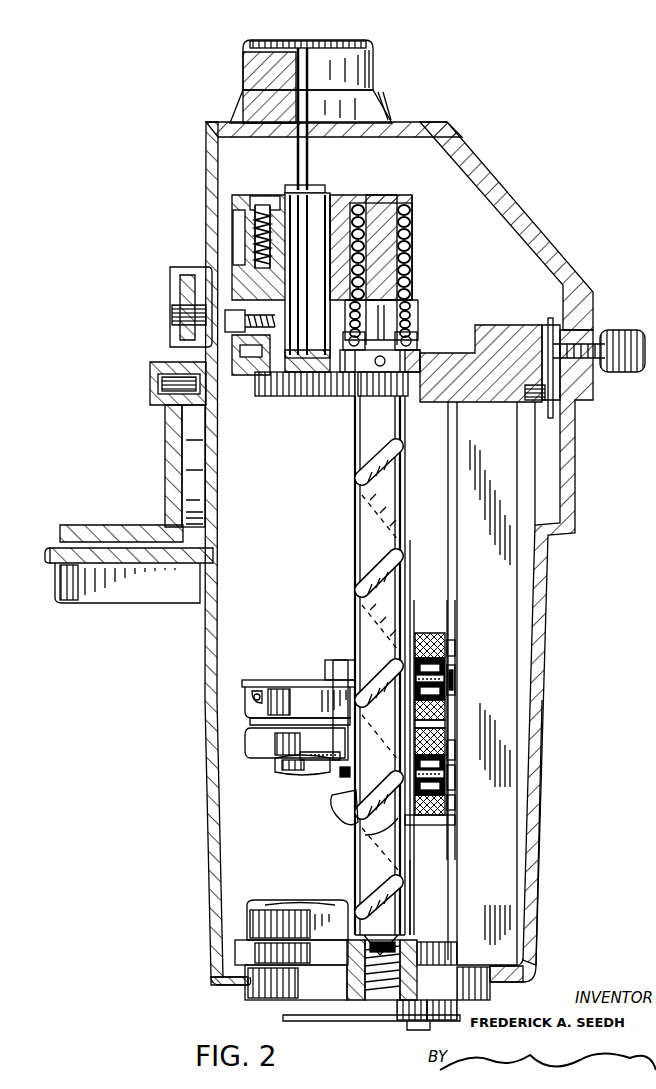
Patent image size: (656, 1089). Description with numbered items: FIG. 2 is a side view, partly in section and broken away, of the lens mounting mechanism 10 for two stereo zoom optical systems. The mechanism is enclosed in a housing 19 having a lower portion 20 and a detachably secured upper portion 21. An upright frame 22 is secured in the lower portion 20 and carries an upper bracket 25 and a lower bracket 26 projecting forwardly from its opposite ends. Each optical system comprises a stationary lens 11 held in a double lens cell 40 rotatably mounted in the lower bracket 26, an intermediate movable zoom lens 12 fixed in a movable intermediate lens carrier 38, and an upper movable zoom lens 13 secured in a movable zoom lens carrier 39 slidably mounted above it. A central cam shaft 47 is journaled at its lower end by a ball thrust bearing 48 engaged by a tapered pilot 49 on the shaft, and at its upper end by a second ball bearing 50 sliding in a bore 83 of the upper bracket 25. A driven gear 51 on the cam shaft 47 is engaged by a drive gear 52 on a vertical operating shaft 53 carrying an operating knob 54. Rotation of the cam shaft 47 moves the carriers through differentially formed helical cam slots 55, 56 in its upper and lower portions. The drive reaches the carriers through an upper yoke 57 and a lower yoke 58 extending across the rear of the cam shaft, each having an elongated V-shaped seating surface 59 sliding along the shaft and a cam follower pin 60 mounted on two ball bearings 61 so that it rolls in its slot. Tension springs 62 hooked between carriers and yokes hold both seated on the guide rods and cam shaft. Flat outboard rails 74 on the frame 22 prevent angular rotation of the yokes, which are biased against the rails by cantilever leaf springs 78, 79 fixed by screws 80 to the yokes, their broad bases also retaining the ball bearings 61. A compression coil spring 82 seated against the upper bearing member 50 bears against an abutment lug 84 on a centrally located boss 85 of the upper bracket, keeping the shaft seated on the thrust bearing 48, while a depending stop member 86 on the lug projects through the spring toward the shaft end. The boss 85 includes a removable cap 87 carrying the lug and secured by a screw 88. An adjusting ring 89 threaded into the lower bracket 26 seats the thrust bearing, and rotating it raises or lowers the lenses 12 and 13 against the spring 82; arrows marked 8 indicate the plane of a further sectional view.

The lens mounting mechanism 10 is at (607, 642).
The section line 8 is at (416, 558).
The stationary lens 11 is at (295, 905).
The intermediate movable zoom system lens 12 is at (300, 772).
The upper movable zoom system lens 13 is at (300, 716).
The housing 19 is at (545, 722).
The lower portion 20 is at (538, 818).
The upper portion 21 is at (570, 268).
The upright frame 22 is at (506, 468).
The upper bracket 25 is at (432, 402).
The lower bracket 26 is at (428, 958).
The movable intermediate lens carrier 38 is at (338, 815).
The movable zoom lens carrier 39 is at (296, 672).
The unitary double lens cell 40 is at (346, 893).
The central cam shaft 47 is at (356, 504).
The ball thrust bearing 48 is at (352, 972).
The tapered pilot 49 is at (400, 928).
The second ball bearing 50 is at (412, 335).
The driven gear 51 is at (358, 397).
The drive gear 52 is at (300, 398).
The vertical operating shaft 53 is at (318, 165).
The operating knob 54 is at (370, 64).
The helical cam slot 55 is at (358, 575).
The helical cam slot 56 is at (362, 832).
The upper yoke 57 is at (432, 630).
The lower yoke 58 is at (427, 828).
The V-shaped seating surface 59 is at (414, 645).
The cam follower pin 60 is at (368, 655).
The ball bearings 61 is at (455, 668).
The tension springs 62 is at (455, 682).
The outboard rail 74 is at (457, 500).
The cantilever leaf spring 78 is at (452, 654).
The cantilever leaf spring 79 is at (455, 800).
The screws 80 is at (450, 632).
The compression coil spring 82 is at (408, 272).
The bore 83 is at (415, 352).
The abutment lug 84 is at (405, 205).
The boss 85 is at (250, 285).
The depending stop member 86 is at (402, 252).
The removable cap 87 is at (365, 197).
The screw 88 is at (258, 203).
The adjusting ring 89 is at (365, 1000).